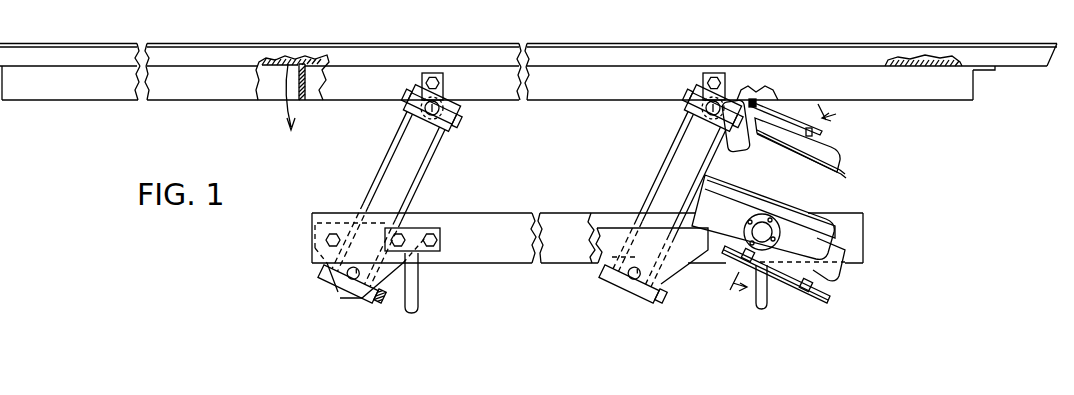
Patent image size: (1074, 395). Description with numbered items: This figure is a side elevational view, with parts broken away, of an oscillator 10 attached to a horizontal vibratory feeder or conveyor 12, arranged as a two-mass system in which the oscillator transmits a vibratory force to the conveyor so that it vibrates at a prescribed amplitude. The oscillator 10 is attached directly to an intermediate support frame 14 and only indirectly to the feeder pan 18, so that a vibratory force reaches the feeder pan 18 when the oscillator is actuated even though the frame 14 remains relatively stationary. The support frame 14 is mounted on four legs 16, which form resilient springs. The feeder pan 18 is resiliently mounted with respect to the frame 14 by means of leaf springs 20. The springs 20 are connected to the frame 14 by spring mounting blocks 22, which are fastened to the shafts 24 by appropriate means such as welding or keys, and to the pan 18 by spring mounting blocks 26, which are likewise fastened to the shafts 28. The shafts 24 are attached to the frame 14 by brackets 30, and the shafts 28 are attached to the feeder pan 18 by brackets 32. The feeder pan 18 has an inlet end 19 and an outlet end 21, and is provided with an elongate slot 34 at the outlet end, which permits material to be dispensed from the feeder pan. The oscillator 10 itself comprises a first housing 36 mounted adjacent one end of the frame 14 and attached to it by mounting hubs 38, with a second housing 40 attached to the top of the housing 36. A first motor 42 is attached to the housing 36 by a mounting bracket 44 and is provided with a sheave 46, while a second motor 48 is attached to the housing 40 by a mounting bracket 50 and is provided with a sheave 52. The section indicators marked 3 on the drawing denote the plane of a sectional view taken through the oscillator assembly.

The oscillator 10 is at (800, 199).
The feeder or conveyor 12 is at (364, 163).
The intermediate support frame 14 is at (571, 249).
The spring legs 16 is at (411, 296).
The feeder pan 18 is at (580, 92).
The inlet end 19 is at (985, 45).
The leaf springs 20 is at (422, 182).
The outlet end 21 is at (58, 44).
The spring mounting blocks 22 is at (325, 274).
The shafts 24 is at (347, 286).
The spring mounting blocks 26 is at (446, 129).
The shafts 28 is at (440, 104).
The brackets 30 is at (356, 287).
The brackets 32 is at (425, 76).
The elongate slot 34 is at (278, 92).
The first housing 36 is at (845, 231).
The mounting hubs 38 is at (780, 232).
The second housing 40 is at (838, 160).
The first motor 42 is at (848, 262).
The mounting bracket 44 is at (838, 272).
The sheave 46 is at (805, 294).
The second motor 48 is at (744, 145).
The mounting bracket 50 is at (758, 132).
The sheave 52 is at (760, 100).
The section line 3- 3 is at (790, 208).